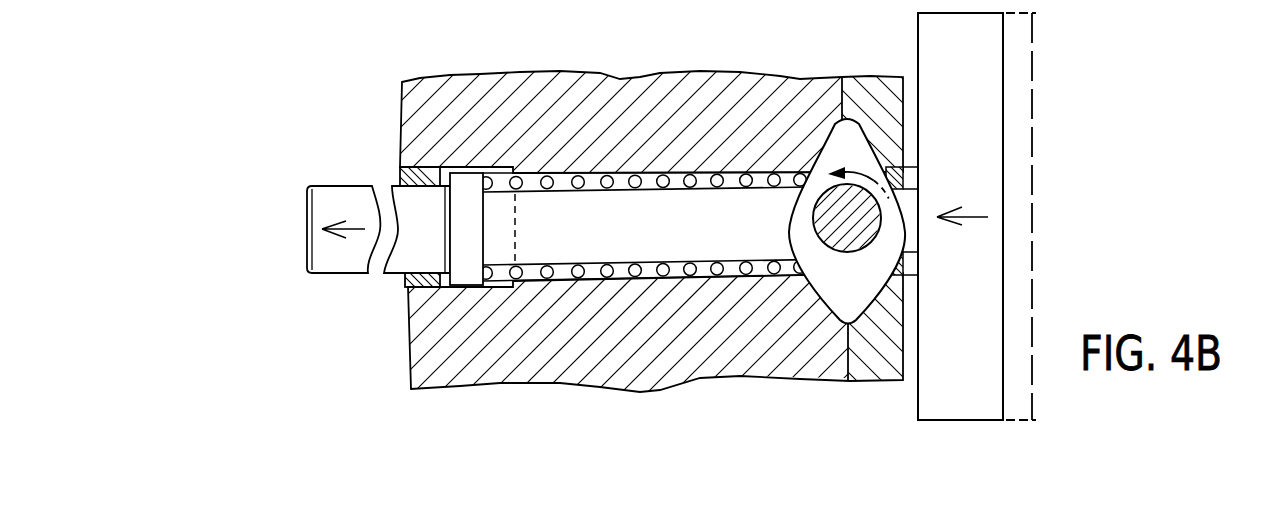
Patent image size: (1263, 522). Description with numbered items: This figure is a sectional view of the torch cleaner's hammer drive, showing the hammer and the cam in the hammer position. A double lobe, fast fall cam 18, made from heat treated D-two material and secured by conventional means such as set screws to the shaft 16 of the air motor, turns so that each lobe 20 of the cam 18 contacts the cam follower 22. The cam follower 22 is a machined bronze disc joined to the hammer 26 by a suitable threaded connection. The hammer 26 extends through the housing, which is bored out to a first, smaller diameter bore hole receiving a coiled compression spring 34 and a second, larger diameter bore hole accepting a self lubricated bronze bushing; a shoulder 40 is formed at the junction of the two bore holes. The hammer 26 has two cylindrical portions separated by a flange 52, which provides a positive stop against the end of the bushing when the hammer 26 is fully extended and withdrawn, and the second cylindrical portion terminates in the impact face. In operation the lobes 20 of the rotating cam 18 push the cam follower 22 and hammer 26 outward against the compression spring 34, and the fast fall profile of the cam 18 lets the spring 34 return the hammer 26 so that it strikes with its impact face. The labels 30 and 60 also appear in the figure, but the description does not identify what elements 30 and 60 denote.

The shaft 16 is at (862, 226).
The cam 18 is at (798, 221).
The lobe 20 is at (841, 122).
The cam follower 22 is at (940, 95).
The hammer 26 is at (342, 202).
The housing 30 is at (400, 82).
The coiled compression spring 34 is at (683, 183).
The shoulder 40 is at (515, 241).
The flange 52 is at (407, 253).
The gap / spacer 60 is at (890, 175).